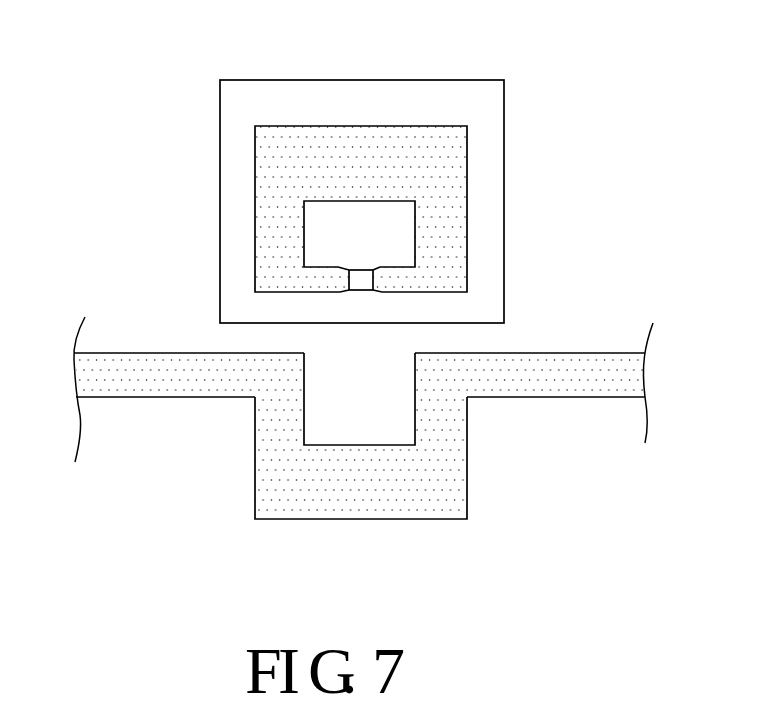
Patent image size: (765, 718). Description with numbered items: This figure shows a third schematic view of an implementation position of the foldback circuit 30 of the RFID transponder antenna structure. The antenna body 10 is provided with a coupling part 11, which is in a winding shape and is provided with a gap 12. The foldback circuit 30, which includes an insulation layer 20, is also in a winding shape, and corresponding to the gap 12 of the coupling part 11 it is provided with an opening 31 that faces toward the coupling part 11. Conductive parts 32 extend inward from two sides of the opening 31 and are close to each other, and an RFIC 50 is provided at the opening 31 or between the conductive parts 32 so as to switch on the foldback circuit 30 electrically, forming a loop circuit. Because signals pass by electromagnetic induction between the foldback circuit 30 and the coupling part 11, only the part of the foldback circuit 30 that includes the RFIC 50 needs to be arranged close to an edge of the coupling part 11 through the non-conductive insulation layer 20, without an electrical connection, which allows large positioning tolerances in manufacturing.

The antenna body 10 is at (147, 365).
The coupling part 11 is at (447, 482).
The gap 12 is at (343, 408).
The insulation layer 20 is at (460, 93).
The foldback circuit 30 is at (361, 125).
The opening 31 is at (358, 235).
The conductive parts 32 is at (322, 268).
The RFIC 50 is at (360, 280).